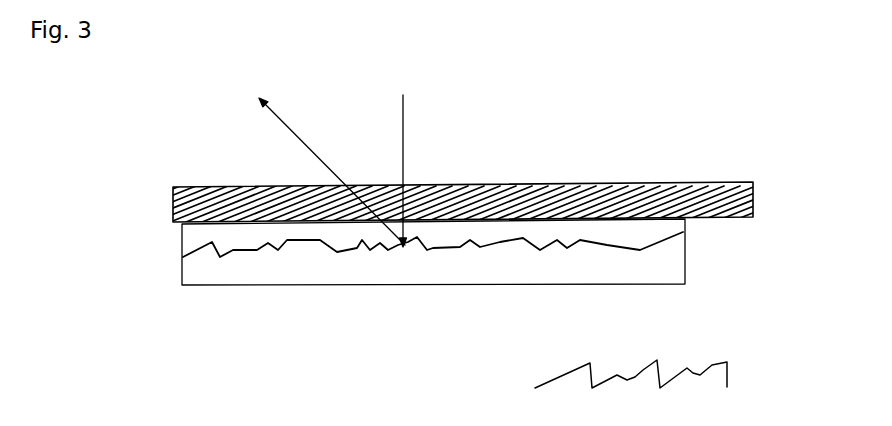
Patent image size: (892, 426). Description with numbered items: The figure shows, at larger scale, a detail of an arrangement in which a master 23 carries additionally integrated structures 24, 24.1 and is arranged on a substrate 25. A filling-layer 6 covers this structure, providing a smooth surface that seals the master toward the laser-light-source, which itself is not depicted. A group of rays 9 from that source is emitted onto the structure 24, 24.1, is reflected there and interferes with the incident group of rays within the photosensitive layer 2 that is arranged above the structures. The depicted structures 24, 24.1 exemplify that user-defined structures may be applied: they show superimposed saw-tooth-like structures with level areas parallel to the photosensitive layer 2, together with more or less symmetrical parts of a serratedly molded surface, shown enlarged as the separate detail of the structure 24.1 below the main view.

The photosensitive layer 2 is at (740, 207).
The filling-layer 6 is at (191, 242).
The group of rays 9 is at (403, 135).
The master 23 is at (677, 250).
The structure 24 is at (405, 257).
The structure 24.1 is at (631, 353).
The substrate 25 is at (615, 272).